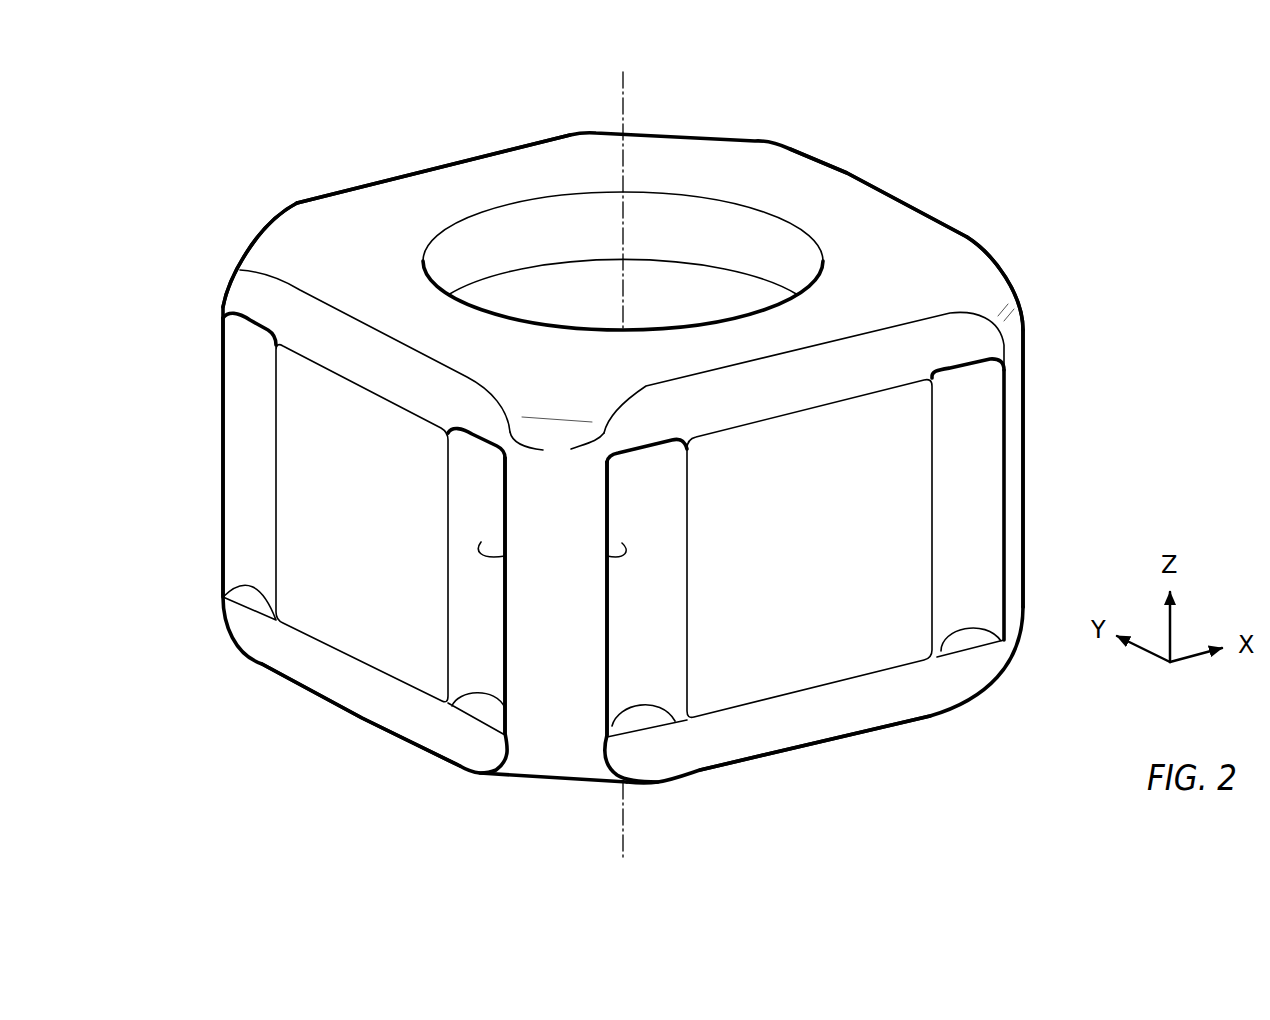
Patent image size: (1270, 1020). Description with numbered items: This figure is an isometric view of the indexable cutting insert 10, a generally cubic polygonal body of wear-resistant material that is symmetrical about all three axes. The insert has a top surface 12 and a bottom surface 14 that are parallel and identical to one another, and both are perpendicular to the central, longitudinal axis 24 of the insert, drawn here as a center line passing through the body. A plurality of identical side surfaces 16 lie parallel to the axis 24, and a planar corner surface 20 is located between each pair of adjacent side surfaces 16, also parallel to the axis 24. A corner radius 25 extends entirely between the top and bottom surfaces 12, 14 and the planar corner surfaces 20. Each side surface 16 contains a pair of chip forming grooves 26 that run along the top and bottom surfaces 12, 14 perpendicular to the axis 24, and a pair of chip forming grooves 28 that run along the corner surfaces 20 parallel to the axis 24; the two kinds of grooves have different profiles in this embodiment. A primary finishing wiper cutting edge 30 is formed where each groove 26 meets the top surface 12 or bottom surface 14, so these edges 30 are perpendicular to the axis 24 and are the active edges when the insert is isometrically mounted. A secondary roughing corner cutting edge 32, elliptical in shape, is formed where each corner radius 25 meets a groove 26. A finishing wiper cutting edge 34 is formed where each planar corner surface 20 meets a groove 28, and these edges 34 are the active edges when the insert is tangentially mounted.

The indexable cutting insert 10 is at (182, 112).
The top surface 12 is at (500, 174).
The bottom surface 14 is at (822, 778).
The side surface 16 is at (346, 616).
The planar corner surface 20 is at (553, 743).
The central, longitudinal axis 24 is at (625, 103).
The corner radius 25 is at (264, 250).
The chip forming groove 26 is at (327, 330).
The chip forming groove 28 is at (247, 472).
The primary finishing wiper cutting edge 30 is at (405, 174).
The secondary roughing corner cutting edge 32 is at (240, 269).
The finishing wiper cutting edge 34 is at (223, 407).